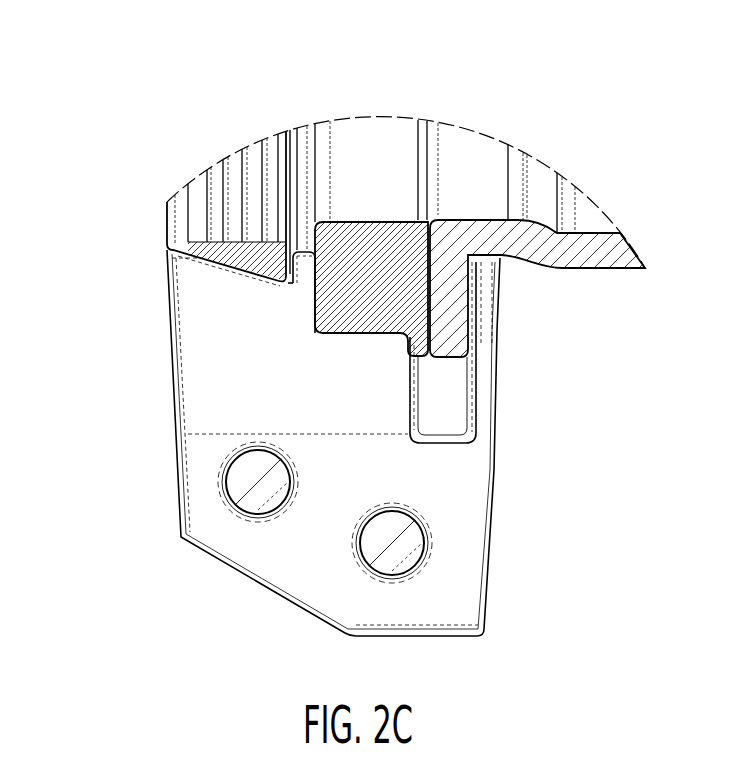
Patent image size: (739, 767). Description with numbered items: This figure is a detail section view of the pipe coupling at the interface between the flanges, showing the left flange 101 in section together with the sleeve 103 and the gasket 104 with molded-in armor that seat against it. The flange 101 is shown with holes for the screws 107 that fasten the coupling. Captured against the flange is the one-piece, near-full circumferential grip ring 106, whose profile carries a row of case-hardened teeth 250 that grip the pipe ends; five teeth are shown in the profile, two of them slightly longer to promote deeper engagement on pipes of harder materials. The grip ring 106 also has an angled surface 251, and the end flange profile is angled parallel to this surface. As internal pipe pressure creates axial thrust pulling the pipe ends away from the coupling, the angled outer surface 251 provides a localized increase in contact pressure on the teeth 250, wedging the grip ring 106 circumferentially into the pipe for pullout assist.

The left flange 101 is at (465, 488).
The sleeve 103 is at (455, 245).
The gasket 104 is at (389, 262).
The grip ring 106 is at (282, 237).
The screws 107 is at (266, 483).
The teeth 250 is at (250, 168).
The angled surface 251 is at (240, 280).